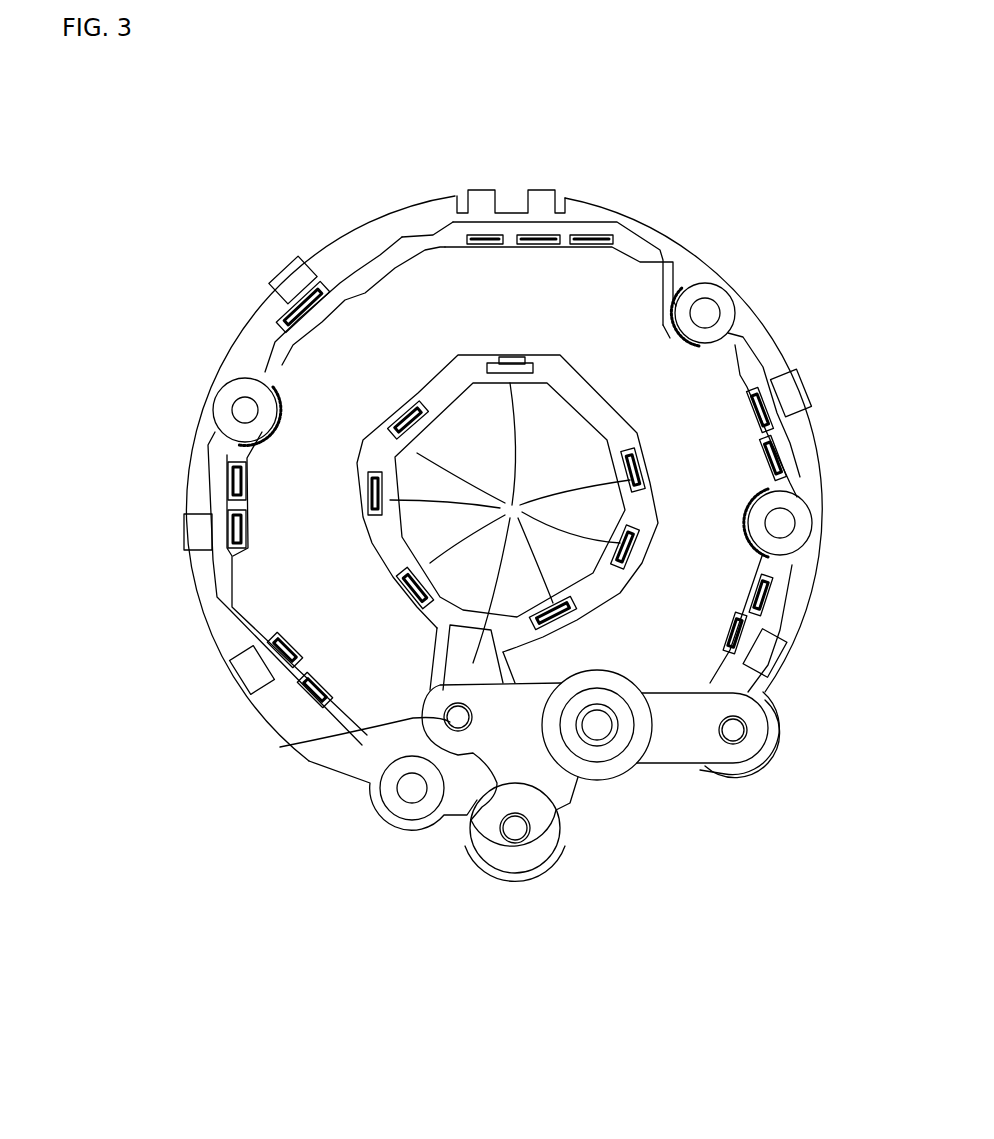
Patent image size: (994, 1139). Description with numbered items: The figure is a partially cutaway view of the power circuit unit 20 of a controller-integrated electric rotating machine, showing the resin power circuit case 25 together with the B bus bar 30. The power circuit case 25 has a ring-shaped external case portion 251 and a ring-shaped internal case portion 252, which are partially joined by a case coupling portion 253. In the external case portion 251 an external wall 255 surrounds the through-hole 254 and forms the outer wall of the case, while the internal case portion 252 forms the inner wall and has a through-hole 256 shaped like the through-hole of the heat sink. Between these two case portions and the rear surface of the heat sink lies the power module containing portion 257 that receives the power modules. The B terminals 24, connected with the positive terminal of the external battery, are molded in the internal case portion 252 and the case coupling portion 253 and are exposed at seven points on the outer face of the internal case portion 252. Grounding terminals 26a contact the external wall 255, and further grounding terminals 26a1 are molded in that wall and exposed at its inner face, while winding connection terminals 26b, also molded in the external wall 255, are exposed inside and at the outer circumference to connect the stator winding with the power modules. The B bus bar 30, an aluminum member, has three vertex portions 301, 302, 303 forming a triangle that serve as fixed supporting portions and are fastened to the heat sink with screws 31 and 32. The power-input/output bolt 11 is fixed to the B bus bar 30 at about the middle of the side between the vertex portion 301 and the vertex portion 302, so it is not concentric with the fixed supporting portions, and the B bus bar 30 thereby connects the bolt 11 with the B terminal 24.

The power circuit unit 20 is at (527, 105).
The B terminal 24 is at (510, 523).
The power circuit case 25 is at (570, 377).
The external case portion 251 is at (335, 257).
The internal case portion 252 is at (617, 255).
The case coupling portion 253 is at (437, 670).
The through-hole 254 is at (273, 540).
The external wall 255 is at (673, 270).
The through-hole 256 is at (463, 427).
The power module containing portion 257 is at (663, 410).
The grounding terminal 26a is at (220, 413).
The grounding terminal 26a1 is at (582, 245).
The winding connection terminal 26b is at (293, 280).
The B bus bar 30 is at (563, 807).
The vertex portion 301 is at (457, 717).
The vertex portion 302 is at (727, 750).
The vertex portion 303 is at (510, 830).
The screw 31 is at (345, 790).
The screw 32 is at (517, 830).
The power-input/output bolt 11 is at (597, 723).